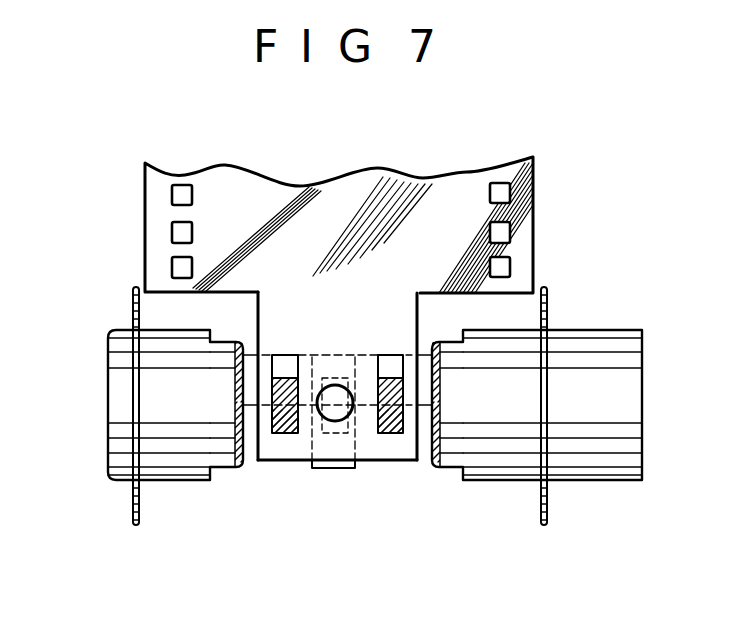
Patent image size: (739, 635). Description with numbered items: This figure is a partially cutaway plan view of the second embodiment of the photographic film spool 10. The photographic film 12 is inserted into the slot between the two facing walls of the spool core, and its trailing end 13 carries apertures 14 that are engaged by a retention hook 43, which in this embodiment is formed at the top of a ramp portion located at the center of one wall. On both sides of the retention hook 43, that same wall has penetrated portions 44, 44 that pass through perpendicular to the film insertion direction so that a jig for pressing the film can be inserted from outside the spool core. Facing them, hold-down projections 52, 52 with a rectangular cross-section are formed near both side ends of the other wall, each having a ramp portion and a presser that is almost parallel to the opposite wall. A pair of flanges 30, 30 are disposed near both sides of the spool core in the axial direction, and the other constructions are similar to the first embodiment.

The photographic film spool 10 is at (370, 194).
The photographic film 12 is at (525, 228).
The trailing end 13 is at (300, 463).
The aperture 14 is at (350, 388).
The flange 30 is at (130, 300).
The retention hook 43 is at (332, 395).
The penetrated portion 44 is at (277, 450).
The hold-down projection 52 is at (280, 377).